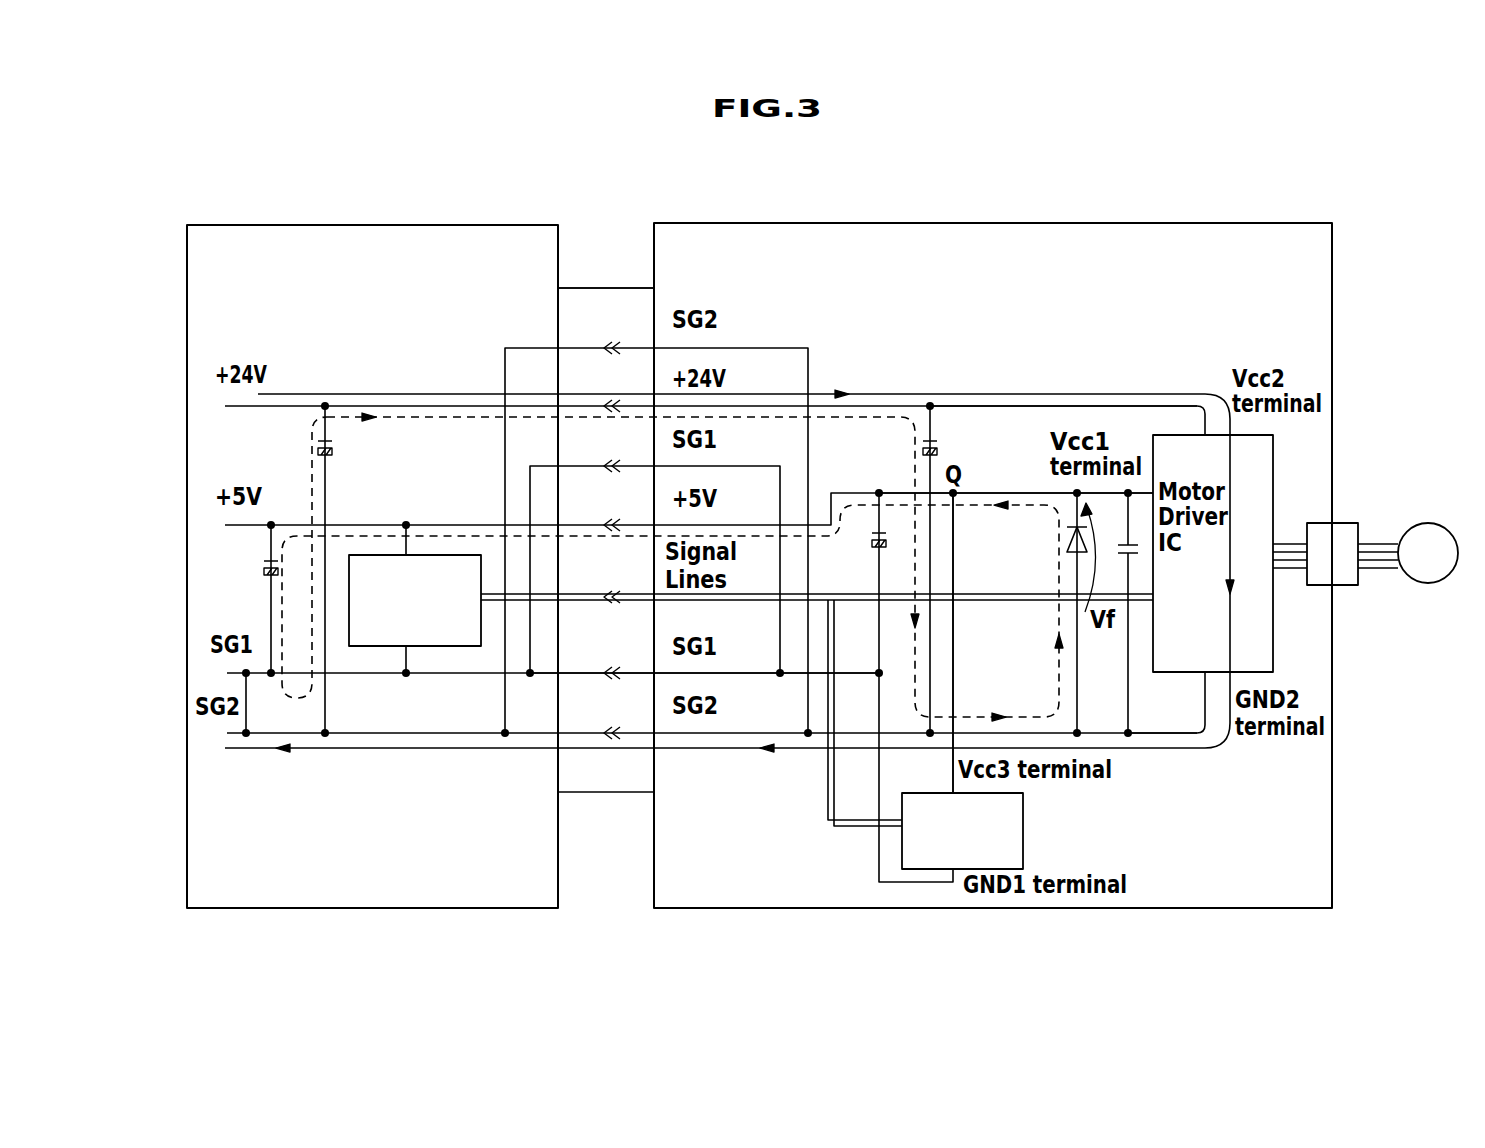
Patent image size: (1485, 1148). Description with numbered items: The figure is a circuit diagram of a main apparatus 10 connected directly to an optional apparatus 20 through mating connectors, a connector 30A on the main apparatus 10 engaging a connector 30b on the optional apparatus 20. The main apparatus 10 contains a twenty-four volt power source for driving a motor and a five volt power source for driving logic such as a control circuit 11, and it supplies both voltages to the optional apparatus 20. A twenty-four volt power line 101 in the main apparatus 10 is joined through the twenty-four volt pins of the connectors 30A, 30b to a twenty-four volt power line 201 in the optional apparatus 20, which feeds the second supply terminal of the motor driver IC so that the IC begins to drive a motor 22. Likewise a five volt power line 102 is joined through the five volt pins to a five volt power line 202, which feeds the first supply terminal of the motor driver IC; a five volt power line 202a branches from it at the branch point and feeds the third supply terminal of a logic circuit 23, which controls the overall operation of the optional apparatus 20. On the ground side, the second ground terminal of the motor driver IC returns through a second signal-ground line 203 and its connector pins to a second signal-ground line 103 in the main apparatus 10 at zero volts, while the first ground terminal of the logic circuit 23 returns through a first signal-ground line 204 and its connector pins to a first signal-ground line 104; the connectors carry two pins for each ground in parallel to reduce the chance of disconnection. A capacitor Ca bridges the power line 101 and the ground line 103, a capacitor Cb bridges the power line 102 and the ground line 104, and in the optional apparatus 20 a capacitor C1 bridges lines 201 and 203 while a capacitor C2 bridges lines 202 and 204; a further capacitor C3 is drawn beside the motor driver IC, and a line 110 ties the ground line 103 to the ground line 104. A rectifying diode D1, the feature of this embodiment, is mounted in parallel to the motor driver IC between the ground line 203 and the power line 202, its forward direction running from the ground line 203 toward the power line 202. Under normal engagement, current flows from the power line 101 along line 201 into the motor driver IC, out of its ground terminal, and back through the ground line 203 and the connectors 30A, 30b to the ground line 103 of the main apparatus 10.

The main apparatus 10 is at (372, 548).
The optional apparatus 20 is at (993, 548).
The connector 30A is at (575, 794).
The connector 30b is at (633, 794).
The control circuit 11 is at (415, 600).
The logic circuit 23 is at (962, 833).
The motor 22 is at (1369, 523).
The +24 V power line 101 is at (443, 404).
The +5 V power line 102 is at (443, 524).
The SG2 line 103 is at (368, 735).
The SG1 line 104 is at (357, 674).
The line 110 is at (245, 708).
The +24 V power line 201 is at (997, 404).
The +5 V power line 202 is at (996, 492).
The +5 V power line 202a is at (955, 556).
The SG2 line 203 is at (1160, 736).
The SG1 line 204 is at (738, 676).
The capacitor Ca is at (302, 438).
The capacitor Cb is at (271, 557).
The capacitor C1 is at (921, 439).
The capacitor C2 is at (873, 537).
The capacitor C3 is at (1117, 530).
The rectifying diode D1 is at (1054, 531).